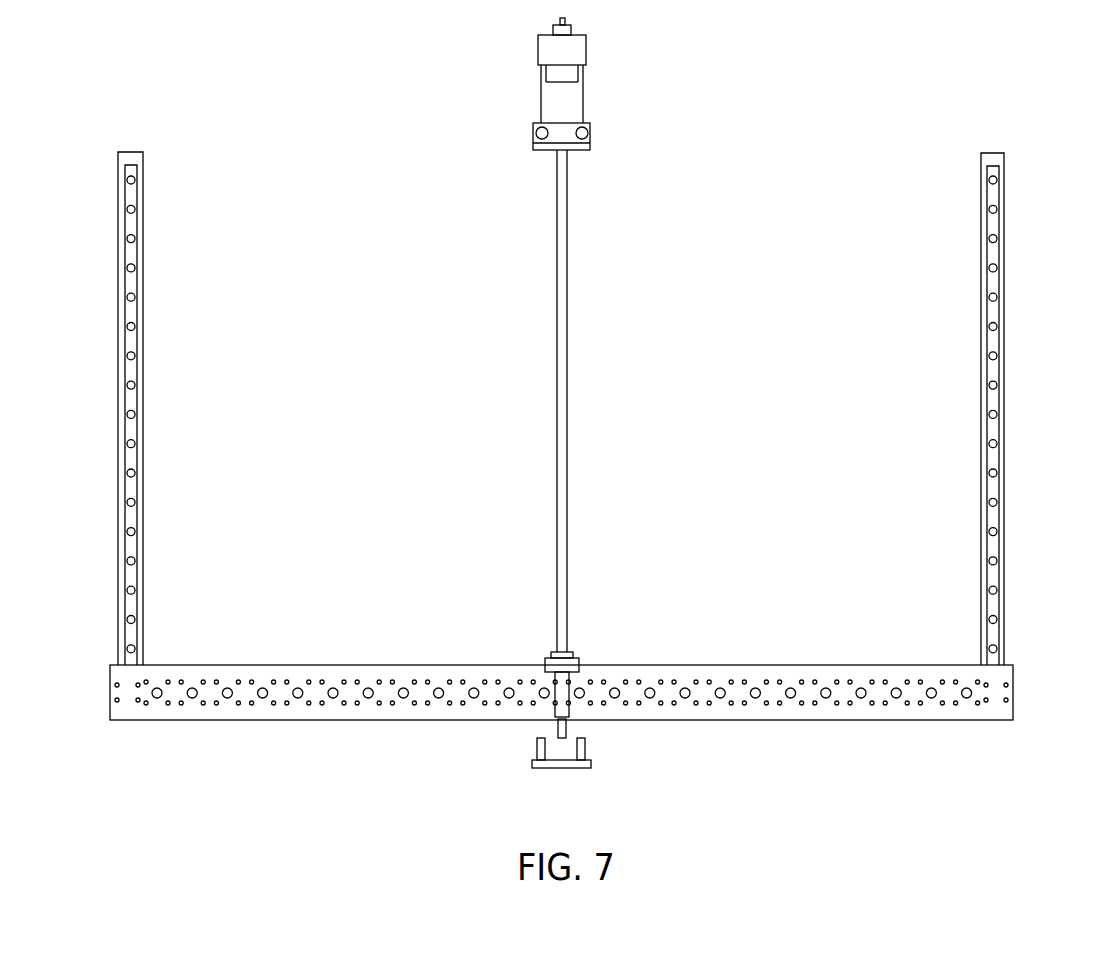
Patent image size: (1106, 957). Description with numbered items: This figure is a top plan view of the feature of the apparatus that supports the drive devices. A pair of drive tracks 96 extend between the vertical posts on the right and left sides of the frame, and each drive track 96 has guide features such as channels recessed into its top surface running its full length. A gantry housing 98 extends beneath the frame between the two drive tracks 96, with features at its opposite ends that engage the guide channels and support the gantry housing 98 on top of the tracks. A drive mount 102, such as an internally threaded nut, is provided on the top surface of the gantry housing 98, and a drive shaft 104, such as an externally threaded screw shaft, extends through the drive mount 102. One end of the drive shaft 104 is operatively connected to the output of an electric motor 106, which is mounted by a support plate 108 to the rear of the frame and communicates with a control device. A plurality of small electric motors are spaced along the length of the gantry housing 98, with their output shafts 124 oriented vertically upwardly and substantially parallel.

The drive track 96 is at (118, 275).
The gantry housing 98 is at (819, 713).
The drive mount 102 is at (578, 662).
The drive shaft 104 is at (558, 465).
The electric motor 106 is at (553, 100).
The support plate 108 is at (548, 153).
The output shaft 124 is at (227, 688).